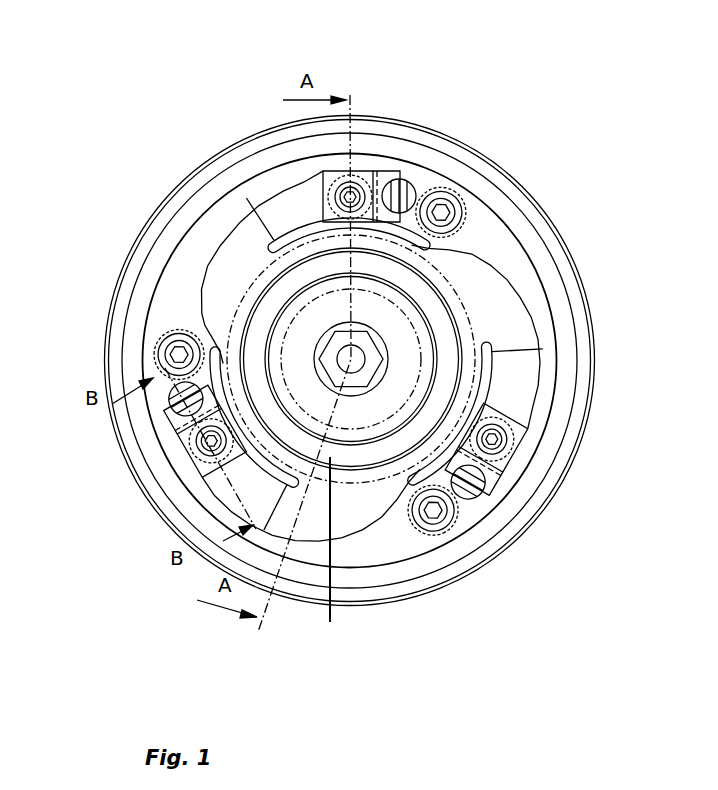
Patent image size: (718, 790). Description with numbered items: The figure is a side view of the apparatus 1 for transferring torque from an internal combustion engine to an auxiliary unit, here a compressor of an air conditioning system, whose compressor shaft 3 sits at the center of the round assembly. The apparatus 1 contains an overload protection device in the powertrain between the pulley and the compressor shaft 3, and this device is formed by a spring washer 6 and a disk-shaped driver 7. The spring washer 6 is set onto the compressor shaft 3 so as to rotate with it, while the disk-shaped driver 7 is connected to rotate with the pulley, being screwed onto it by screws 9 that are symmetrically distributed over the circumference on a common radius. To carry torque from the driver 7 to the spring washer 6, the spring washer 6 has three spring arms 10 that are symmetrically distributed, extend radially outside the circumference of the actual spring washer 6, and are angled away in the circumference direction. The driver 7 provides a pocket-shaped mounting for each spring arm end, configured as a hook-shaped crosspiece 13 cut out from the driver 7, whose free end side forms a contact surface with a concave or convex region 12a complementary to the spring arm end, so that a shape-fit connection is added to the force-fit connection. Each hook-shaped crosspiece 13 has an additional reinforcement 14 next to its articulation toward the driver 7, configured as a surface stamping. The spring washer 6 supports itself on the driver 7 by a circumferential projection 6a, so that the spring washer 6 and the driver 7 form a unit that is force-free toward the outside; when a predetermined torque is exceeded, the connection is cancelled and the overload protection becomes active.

The apparatus 1 is at (145, 132).
The compressor shaft 3 is at (374, 357).
The spring washer 6 is at (425, 265).
The circumferential projection 6a is at (330, 561).
The disk-shaped driver 7 is at (512, 232).
The screws 9 is at (443, 206).
The spring arms 10 is at (527, 397).
The concave or convex region 12a is at (497, 441).
The hook-shaped crosspiece 13 is at (365, 175).
The reinforcement 14 is at (403, 185).